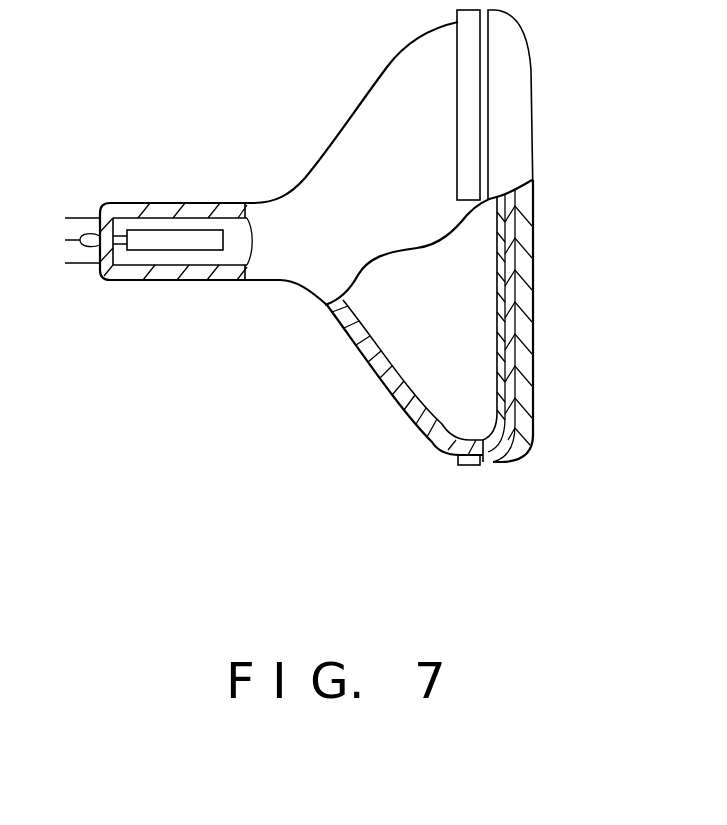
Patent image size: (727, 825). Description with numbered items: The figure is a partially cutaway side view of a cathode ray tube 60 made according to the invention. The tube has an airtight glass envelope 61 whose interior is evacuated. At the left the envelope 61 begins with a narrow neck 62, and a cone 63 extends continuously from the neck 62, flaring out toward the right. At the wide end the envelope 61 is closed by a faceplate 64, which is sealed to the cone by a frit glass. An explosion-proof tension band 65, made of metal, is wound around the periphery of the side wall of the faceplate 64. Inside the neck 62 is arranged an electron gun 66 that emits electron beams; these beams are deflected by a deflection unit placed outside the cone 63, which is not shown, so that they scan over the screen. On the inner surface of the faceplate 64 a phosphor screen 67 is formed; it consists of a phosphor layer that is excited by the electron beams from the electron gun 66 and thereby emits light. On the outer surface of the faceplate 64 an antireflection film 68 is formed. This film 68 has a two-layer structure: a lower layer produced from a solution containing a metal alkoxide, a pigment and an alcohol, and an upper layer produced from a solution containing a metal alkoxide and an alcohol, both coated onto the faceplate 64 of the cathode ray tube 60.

The cathode ray tube 60 is at (328, 260).
The airtight glass envelope 61 is at (286, 283).
The neck 62 is at (177, 203).
The cone 63 is at (337, 143).
The faceplate 64 is at (488, 455).
The explosion-proof tension band 65 is at (460, 467).
The electron gun 66 is at (142, 252).
The phosphor screen 67 is at (497, 248).
The antireflection film 68 is at (507, 60).